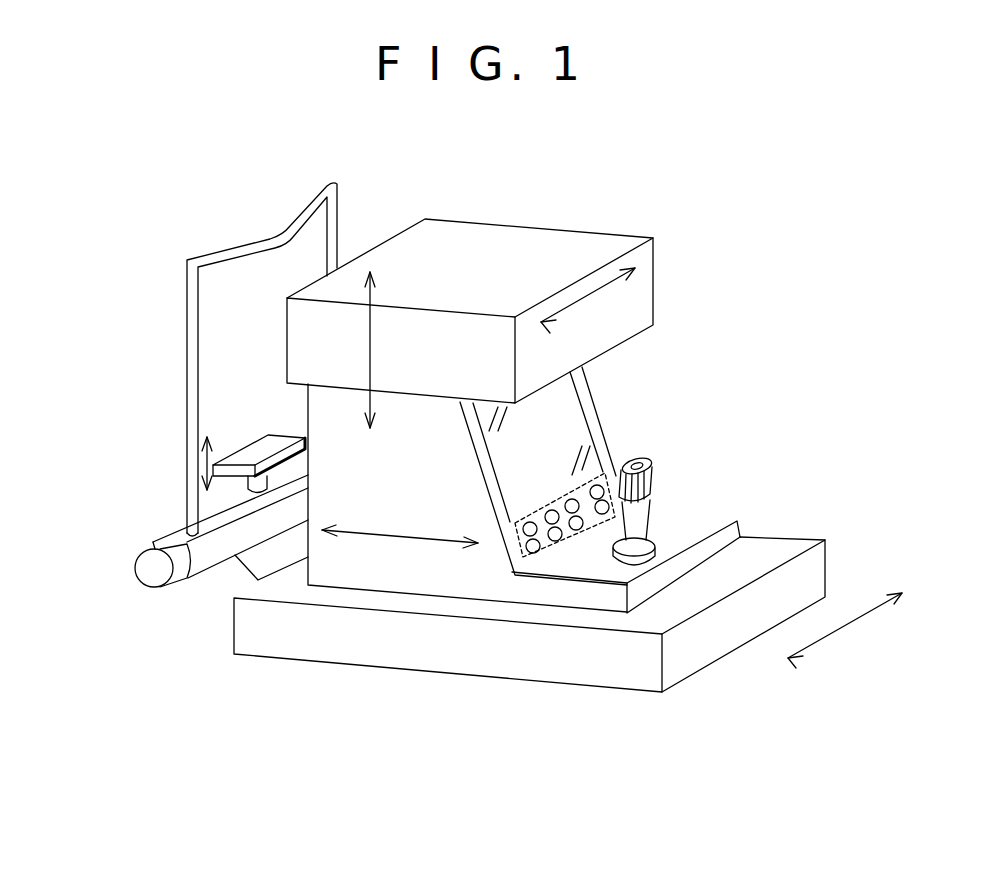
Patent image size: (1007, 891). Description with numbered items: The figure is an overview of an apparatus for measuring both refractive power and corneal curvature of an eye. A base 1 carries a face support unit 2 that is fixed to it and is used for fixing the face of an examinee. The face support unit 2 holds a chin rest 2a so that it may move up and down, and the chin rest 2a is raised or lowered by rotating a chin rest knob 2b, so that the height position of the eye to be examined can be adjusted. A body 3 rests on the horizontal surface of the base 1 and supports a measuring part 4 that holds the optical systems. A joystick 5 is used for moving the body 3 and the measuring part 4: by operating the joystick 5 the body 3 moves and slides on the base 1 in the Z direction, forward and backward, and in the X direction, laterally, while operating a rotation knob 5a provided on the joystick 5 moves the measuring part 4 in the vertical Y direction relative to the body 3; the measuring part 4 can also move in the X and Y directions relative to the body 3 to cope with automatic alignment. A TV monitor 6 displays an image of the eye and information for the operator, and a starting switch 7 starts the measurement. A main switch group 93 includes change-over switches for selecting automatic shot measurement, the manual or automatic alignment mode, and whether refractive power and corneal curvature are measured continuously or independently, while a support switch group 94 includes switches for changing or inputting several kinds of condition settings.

The base 1 is at (356, 642).
The face support unit 2 is at (155, 440).
The chin rest 2a is at (270, 443).
The chin rest knob 2b is at (148, 568).
The body 3 is at (417, 572).
The measuring part 4 is at (483, 250).
The joystick 5 is at (681, 500).
The rotation knob 5a is at (655, 481).
The TV monitor 6 is at (568, 417).
The starting switch 7 is at (643, 453).
The main switch group 93 is at (548, 548).
The support switch group 94 is at (602, 463).